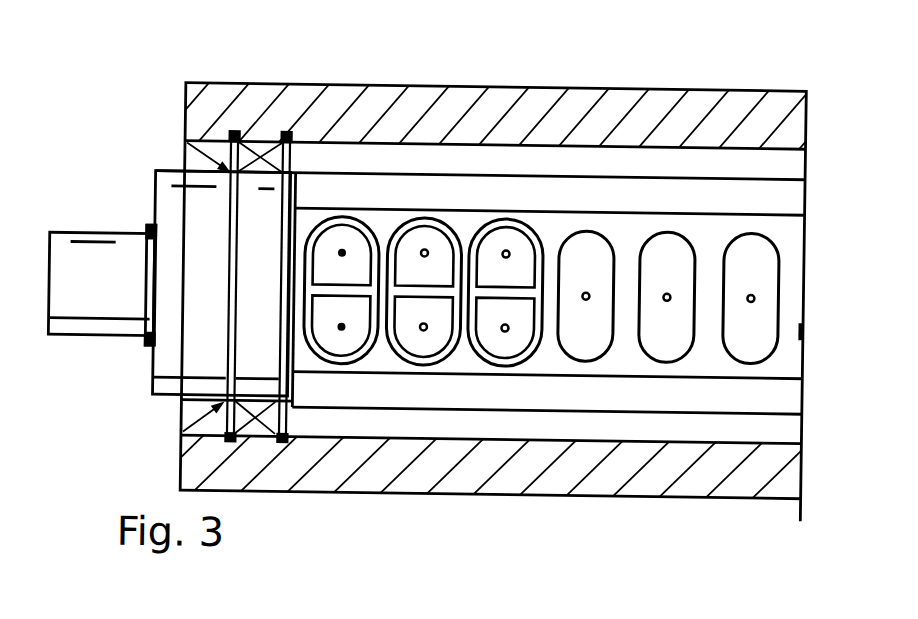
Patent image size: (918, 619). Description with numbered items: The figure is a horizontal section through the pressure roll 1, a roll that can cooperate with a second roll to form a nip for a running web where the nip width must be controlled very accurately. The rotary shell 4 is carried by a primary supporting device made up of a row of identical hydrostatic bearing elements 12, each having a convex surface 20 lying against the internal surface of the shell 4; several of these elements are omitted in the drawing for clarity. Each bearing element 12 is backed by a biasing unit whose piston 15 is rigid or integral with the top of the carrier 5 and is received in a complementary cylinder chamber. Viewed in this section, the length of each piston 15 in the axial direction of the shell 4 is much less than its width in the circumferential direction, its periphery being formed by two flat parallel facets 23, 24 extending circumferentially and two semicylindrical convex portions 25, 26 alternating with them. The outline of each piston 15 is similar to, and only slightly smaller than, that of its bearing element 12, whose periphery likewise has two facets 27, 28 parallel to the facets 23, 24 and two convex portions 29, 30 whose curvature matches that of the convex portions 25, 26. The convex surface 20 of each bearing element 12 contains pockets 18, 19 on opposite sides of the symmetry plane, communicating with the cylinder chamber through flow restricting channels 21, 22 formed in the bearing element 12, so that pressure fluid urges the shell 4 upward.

The pressure roll 1 is at (276, 78).
The shell 4 is at (581, 132).
The carrier 5 is at (629, 228).
The hydrostatic bearing element 12 is at (441, 200).
The piston 15 is at (673, 346).
The pocket 18 is at (256, 232).
The pocket 19 is at (315, 334).
The convex surface 20 is at (367, 359).
The flow restricting channel 21 is at (342, 255).
The flow restricting channel 22 is at (342, 329).
The flat facet of piston 23 is at (599, 389).
The flat facet of piston 24 is at (546, 446).
The convex portion of piston 25 is at (677, 231).
The convex portion of piston 26 is at (683, 358).
The facet of bearing element 27 is at (546, 440).
The facet of bearing element 28 is at (526, 422).
The convex portion of bearing element 29 is at (504, 218).
The convex portion of bearing element 30 is at (506, 332).